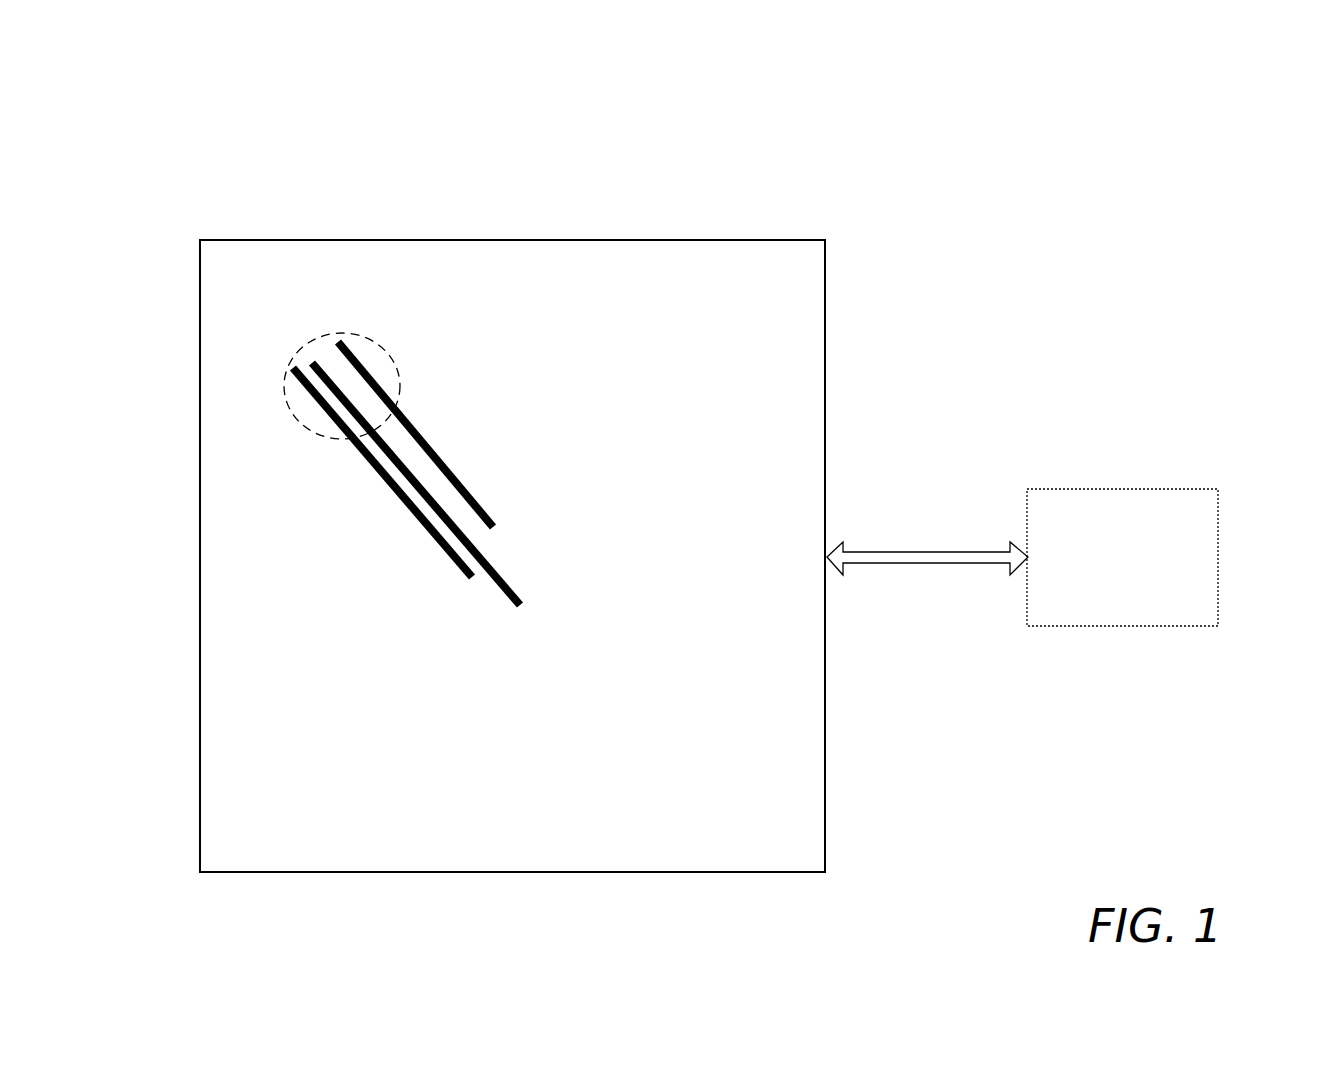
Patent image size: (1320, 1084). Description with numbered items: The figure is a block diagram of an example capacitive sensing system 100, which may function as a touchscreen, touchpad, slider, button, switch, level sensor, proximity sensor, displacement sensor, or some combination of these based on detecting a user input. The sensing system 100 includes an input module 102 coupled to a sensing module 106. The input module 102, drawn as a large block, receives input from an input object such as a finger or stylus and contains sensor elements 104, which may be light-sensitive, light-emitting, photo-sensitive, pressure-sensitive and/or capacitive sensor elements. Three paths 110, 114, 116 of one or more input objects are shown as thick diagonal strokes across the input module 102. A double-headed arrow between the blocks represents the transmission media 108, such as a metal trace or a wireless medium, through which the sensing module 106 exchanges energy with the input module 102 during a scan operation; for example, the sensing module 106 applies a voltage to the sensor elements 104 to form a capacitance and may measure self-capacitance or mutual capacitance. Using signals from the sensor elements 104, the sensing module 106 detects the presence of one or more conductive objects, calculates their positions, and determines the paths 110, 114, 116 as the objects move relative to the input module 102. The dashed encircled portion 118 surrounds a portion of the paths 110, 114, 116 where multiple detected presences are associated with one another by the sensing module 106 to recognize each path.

The sensing system 100 is at (1185, 96).
The input module 102 is at (425, 240).
The sensor elements 104 is at (498, 297).
The sensing module 106 is at (1122, 557).
The transmission media 108 is at (897, 552).
The path 110 is at (410, 507).
The path 114 is at (433, 497).
The path 116 is at (443, 463).
The encircled portion 118 is at (345, 333).